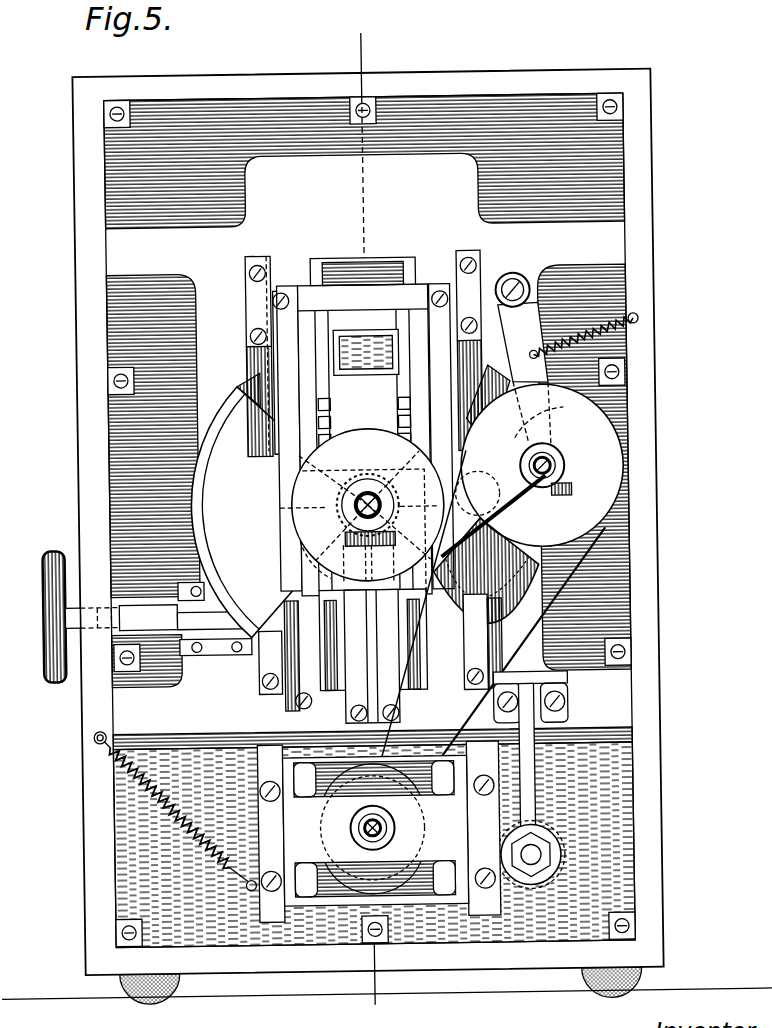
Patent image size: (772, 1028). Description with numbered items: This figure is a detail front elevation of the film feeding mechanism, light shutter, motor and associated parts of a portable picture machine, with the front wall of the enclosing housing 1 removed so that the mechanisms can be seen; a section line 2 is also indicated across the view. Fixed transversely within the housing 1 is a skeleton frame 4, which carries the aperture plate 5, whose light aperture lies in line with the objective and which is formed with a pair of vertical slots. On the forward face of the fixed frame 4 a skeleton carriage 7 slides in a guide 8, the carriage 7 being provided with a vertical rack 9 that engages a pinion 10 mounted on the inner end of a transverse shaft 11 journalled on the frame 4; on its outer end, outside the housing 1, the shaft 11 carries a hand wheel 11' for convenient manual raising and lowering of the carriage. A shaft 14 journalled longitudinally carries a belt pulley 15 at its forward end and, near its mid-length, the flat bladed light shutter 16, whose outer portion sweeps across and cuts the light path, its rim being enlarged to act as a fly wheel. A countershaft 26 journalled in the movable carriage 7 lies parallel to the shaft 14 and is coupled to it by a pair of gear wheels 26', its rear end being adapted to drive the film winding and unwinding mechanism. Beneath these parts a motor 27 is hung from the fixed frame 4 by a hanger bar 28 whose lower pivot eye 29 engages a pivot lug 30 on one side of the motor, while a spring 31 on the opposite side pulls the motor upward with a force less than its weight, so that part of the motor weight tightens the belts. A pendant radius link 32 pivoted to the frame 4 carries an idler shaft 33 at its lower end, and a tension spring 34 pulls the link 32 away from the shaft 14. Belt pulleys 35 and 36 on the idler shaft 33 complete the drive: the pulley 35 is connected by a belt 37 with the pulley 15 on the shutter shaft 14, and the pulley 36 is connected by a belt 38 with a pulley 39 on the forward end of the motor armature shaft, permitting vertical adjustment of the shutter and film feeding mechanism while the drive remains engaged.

The enclosing housing 1 is at (282, 84).
The section line 2 is at (392, 33).
The skeleton frame 4 is at (364, 161).
The aperture plate 5 is at (350, 373).
The skeleton frame or carriage 7 is at (364, 491).
The guide 8 is at (249, 291).
The vertical rack or gear 9 is at (288, 653).
The gear wheel or pinion 10 is at (296, 600).
The transverse shaft 11 is at (169, 619).
The hand wheel 11' is at (60, 604).
The shaft 14 is at (352, 500).
The belt pulley 15 is at (312, 540).
The light shutter 16 is at (280, 512).
The countershaft 26 is at (454, 638).
The gear wheels 26' is at (486, 570).
The motor 27 is at (256, 812).
The hanger bar 28 is at (540, 782).
The pivot eye 29 is at (556, 841).
The pivot lug 30 is at (514, 878).
The spring 31 is at (175, 811).
The pendant radius link 32 is at (521, 327).
The idler shaft 33 is at (565, 462).
The tension spring 34 is at (624, 327).
The belt pulley 35 is at (566, 488).
The belt pulley 36 is at (542, 463).
The belt 37 is at (488, 407).
The belt 38 is at (509, 664).
The pulley 39 is at (346, 829).